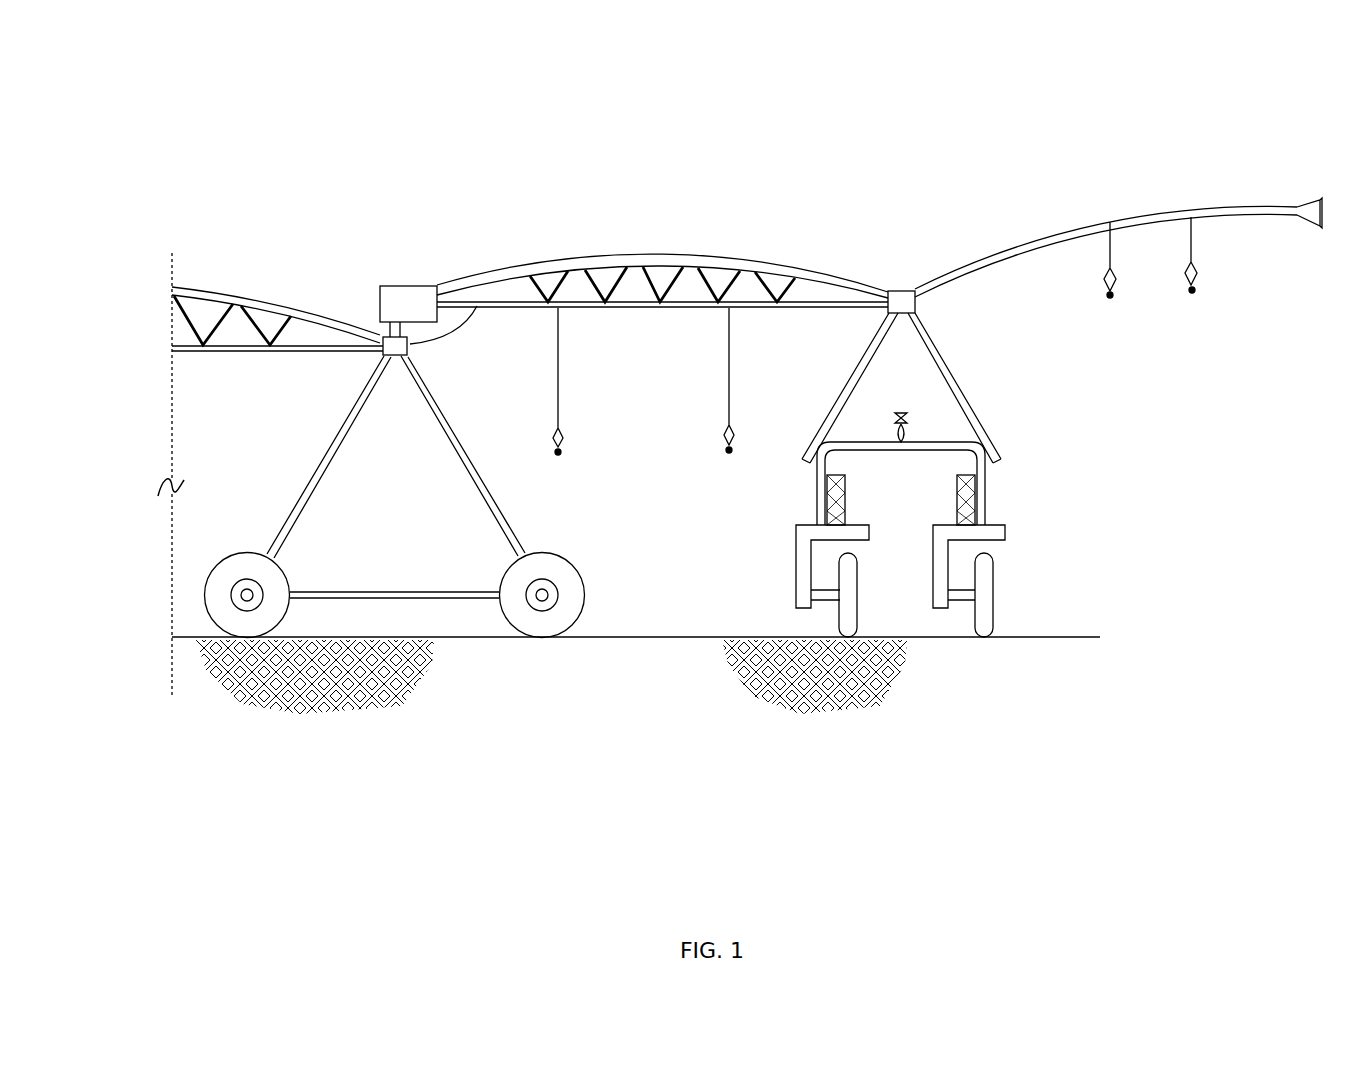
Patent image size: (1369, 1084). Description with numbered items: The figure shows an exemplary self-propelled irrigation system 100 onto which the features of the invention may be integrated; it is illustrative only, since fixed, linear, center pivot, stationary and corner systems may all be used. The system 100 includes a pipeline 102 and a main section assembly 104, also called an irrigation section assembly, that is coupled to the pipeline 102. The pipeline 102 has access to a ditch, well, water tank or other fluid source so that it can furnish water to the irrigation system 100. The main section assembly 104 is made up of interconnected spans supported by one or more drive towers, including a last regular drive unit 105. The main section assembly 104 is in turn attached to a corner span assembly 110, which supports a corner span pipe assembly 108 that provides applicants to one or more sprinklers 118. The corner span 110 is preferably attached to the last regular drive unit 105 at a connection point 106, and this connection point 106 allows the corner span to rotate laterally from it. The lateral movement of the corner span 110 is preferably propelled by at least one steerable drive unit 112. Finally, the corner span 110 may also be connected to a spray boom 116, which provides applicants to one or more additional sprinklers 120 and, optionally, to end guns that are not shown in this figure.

The self-propelled irrigation system 100 is at (244, 228).
The pipeline 102 is at (292, 300).
The main section assembly 104 is at (235, 346).
The last regular drive unit 105 is at (293, 504).
The connection point 106 is at (413, 305).
The corner span pipe assembly 108 is at (620, 257).
The corner span assembly 110 is at (805, 302).
The steerable drive unit 112 is at (947, 533).
The spray boom 116 is at (1107, 222).
The sprinklers 118 is at (729, 450).
The additional sprinklers 120 is at (1110, 295).